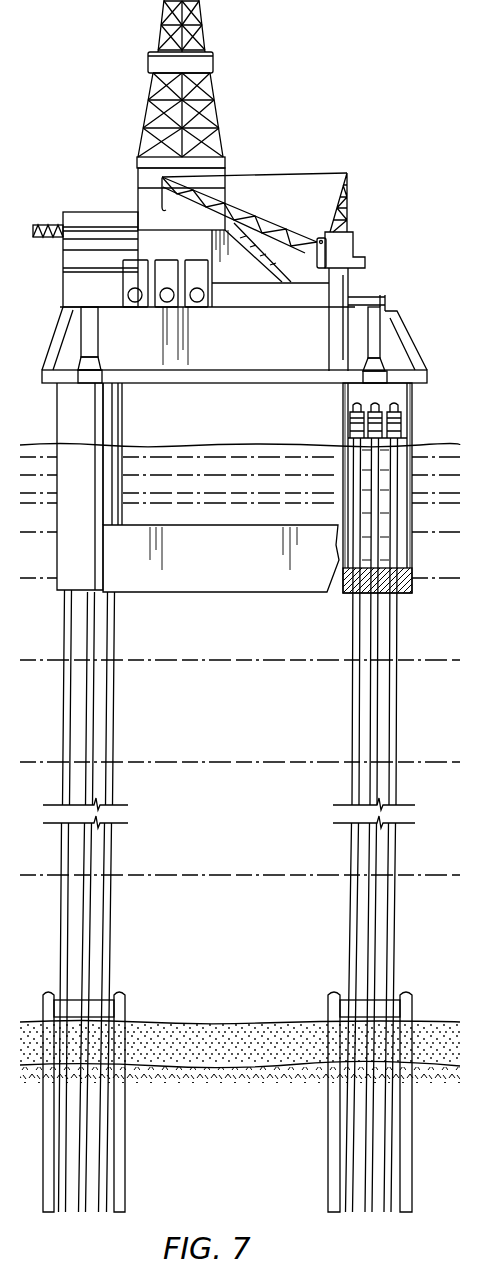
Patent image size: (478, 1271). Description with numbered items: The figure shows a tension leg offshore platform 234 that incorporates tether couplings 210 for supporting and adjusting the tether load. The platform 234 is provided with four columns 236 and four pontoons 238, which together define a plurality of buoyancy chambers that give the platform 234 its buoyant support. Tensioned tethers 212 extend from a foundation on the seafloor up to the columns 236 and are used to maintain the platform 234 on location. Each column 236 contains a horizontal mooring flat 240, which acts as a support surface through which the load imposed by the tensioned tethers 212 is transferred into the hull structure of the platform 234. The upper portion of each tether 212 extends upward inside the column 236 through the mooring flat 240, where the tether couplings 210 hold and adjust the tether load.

The tension leg offshore platform 234 is at (283, 108).
The column 236 is at (118, 408).
The pontoon 238 is at (220, 583).
The mooring flat 240 is at (410, 433).
The tether coupling 210 is at (350, 425).
The tether 212 is at (353, 716).